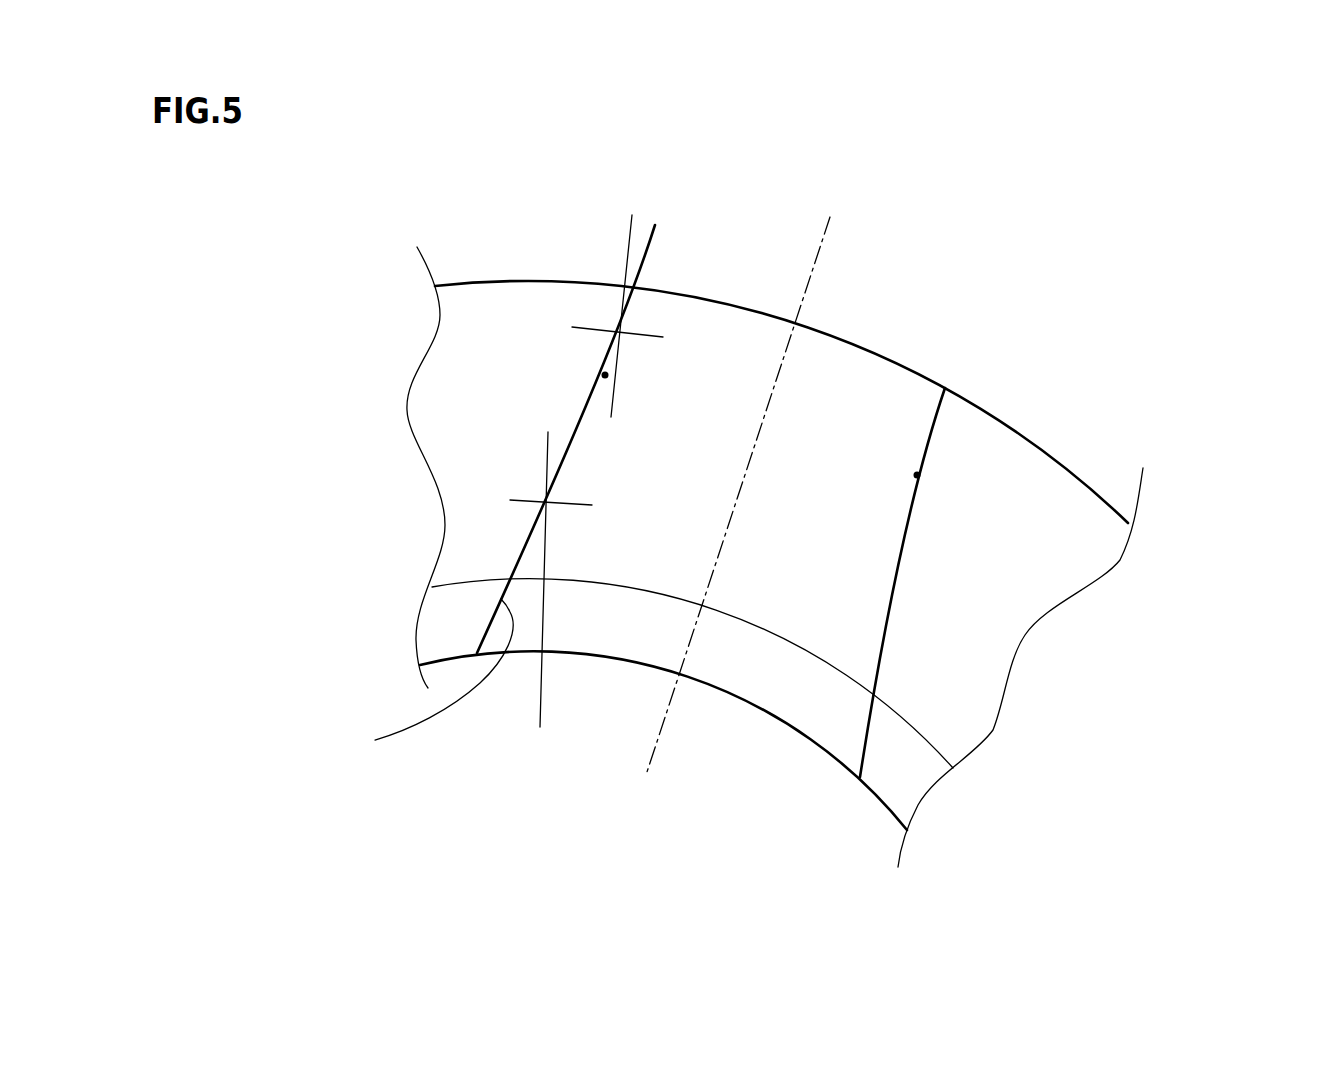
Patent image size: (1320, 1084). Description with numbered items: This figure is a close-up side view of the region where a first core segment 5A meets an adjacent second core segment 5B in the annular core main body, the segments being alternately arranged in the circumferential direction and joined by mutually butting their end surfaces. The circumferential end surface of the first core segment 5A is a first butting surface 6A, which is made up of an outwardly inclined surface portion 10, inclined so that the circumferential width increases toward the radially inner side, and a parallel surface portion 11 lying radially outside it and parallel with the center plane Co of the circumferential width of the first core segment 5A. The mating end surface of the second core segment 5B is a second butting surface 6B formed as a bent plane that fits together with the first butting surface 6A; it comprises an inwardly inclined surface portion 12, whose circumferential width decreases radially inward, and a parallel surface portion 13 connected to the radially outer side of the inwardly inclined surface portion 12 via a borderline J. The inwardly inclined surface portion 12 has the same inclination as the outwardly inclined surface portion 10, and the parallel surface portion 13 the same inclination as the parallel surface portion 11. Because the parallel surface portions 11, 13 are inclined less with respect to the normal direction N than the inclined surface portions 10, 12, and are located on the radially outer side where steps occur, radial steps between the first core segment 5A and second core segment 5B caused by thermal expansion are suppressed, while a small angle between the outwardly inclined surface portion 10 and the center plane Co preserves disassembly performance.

The first core segment 5A is at (868, 375).
The second core segment 5B is at (520, 305).
The first butting surface 6A is at (494, 613).
The second butting surface 6B is at (815, 857).
The outwardly inclined surface portion 10 is at (882, 663).
The parallel surface portion 11 is at (940, 398).
The inwardly inclined surface portion 12 is at (883, 623).
The parallel surface portion 13 is at (930, 437).
The center plane Co is at (749, 479).
The normal direction N is at (586, 485).
The borderline J is at (923, 480).